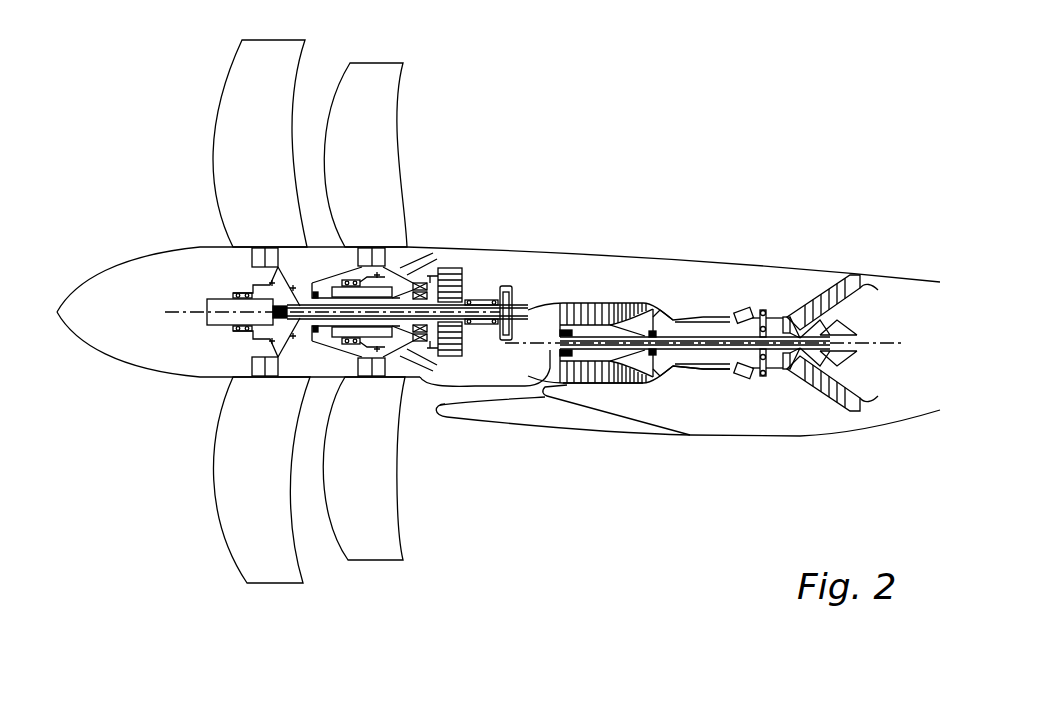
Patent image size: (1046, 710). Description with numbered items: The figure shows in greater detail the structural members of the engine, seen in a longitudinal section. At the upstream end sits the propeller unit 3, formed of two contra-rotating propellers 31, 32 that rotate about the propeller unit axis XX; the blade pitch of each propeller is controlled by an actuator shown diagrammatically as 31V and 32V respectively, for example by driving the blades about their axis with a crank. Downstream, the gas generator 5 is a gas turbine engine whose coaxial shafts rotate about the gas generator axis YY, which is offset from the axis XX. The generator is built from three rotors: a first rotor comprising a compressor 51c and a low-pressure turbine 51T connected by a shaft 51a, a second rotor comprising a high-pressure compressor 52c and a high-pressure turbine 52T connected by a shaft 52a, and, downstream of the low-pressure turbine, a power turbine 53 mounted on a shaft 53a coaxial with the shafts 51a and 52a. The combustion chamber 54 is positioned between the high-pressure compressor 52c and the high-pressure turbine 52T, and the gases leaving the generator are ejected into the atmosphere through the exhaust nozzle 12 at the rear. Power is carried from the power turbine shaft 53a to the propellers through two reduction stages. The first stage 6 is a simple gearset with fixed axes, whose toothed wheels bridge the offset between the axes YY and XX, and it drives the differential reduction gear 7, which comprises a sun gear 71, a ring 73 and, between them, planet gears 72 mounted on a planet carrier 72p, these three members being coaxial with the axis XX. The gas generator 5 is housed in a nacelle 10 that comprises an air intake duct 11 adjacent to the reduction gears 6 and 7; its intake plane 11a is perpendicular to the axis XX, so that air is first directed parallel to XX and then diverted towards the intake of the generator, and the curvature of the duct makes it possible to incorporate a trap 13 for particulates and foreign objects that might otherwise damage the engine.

The propeller unit 3 is at (178, 98).
The first propeller 31 is at (258, 50).
The second propeller 32 is at (385, 78).
The pitch actuator of first propeller 31V is at (220, 307).
The pitch actuator of second propeller 32V is at (333, 287).
The differential reduction gear 7 is at (425, 362).
The ring 73 is at (445, 268).
The planet gears 72 is at (480, 285).
The planet carrier 72p is at (472, 290).
The sun gear 71 is at (497, 295).
The first stage reduction gear 6 is at (497, 330).
The gas generator 5 is at (723, 392).
The compressor of first rotor 51c is at (630, 302).
The high-pressure compressor 52c is at (680, 303).
The combustion chamber 54 is at (735, 305).
The high-pressure turbine 52T is at (763, 310).
The low-pressure turbine 51T is at (790, 300).
The power turbine 53 is at (825, 300).
The power turbine shaft 53a is at (593, 372).
The first rotor shaft 51a is at (637, 372).
The second rotor shaft 52a is at (703, 370).
The exhaust nozzle 12 is at (878, 286).
The nacelle 10 is at (836, 433).
The air intake duct 11 is at (483, 398).
The intake plane 11a is at (447, 407).
The particulate trap 13 is at (543, 398).